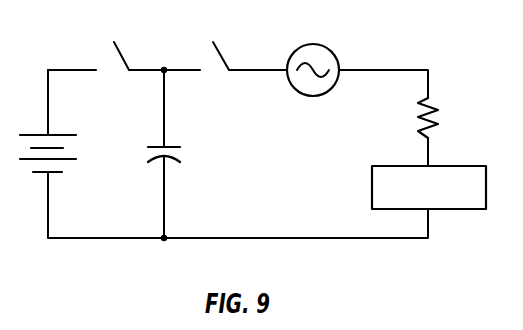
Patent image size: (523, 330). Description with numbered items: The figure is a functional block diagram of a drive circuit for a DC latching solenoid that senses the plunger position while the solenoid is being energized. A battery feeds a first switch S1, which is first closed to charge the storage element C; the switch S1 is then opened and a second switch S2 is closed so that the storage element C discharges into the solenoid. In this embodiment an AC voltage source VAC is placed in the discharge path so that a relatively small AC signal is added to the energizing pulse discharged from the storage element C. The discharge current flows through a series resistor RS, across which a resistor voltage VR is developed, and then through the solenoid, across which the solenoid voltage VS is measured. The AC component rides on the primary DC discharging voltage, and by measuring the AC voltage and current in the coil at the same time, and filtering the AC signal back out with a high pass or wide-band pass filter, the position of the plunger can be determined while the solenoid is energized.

The first switch S1 is at (116, 40).
The second switch S2 is at (216, 40).
The storage element C is at (174, 155).
The AC voltage VAC is at (313, 51).
The resistor voltage VR is at (399, 121).
The series resistor RS is at (447, 118).
The solenoid voltage VS is at (413, 187).